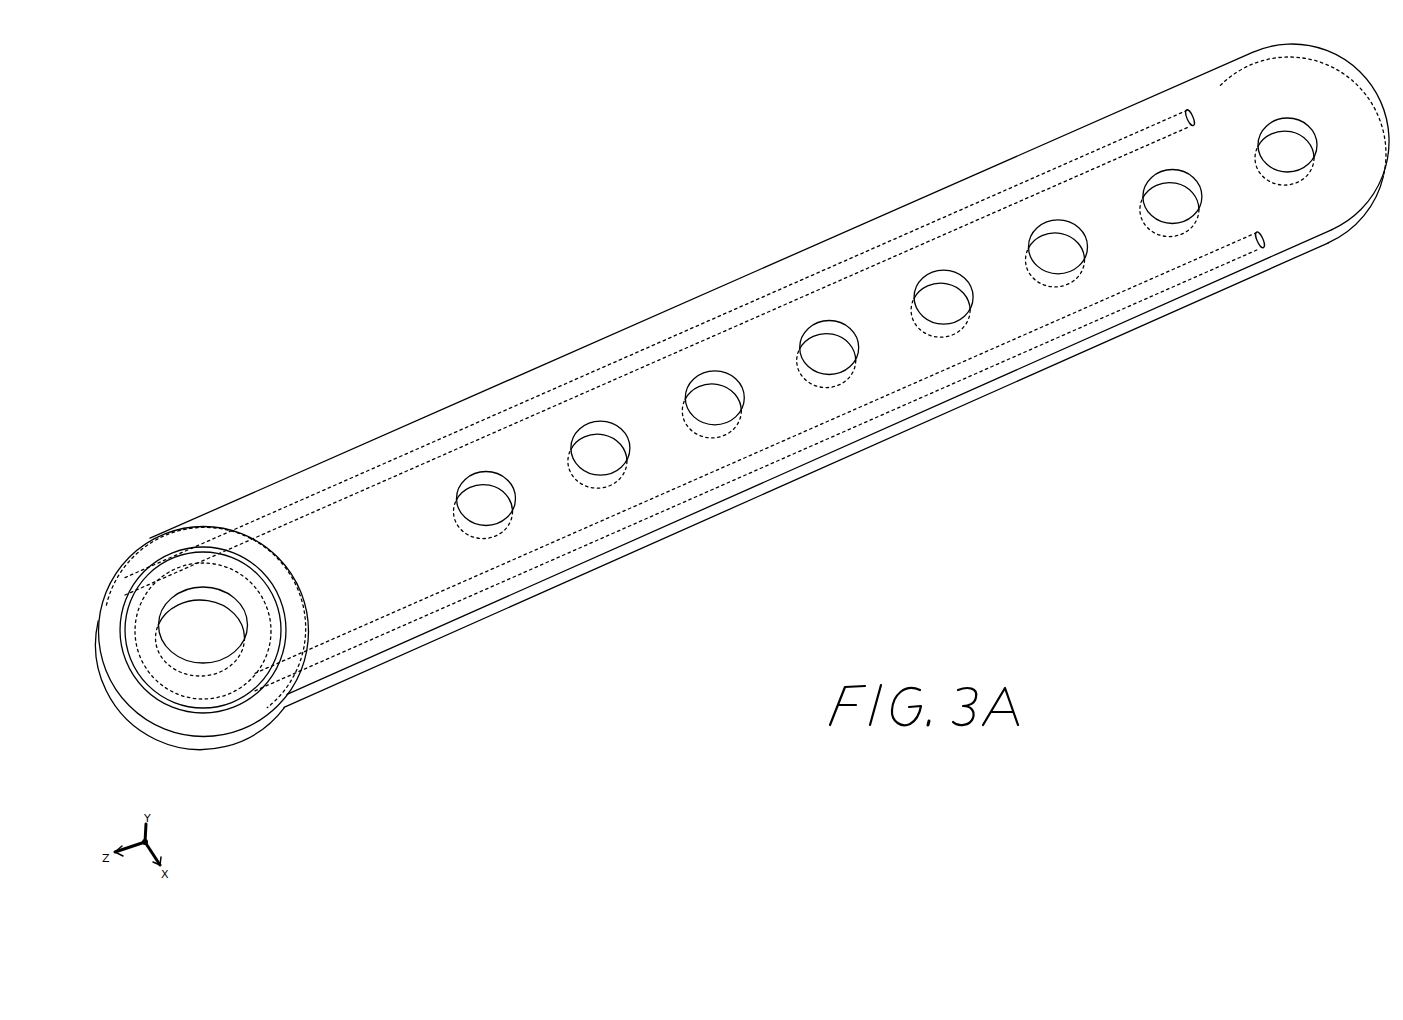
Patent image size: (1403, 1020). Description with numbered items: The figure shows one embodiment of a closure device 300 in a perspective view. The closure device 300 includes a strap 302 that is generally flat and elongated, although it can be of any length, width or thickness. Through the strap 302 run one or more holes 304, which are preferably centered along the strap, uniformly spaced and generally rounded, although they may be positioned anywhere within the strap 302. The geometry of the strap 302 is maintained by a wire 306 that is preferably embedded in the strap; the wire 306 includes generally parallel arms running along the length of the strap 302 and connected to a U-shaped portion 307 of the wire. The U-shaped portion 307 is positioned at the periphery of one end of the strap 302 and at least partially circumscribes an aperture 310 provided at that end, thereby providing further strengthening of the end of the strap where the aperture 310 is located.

The closure device 300 is at (747, 435).
The strap 302 is at (1122, 330).
The holes 304 is at (815, 347).
The wire 306 is at (1010, 193).
The U-shaped portion 307 is at (193, 565).
The aperture 310 is at (220, 653).